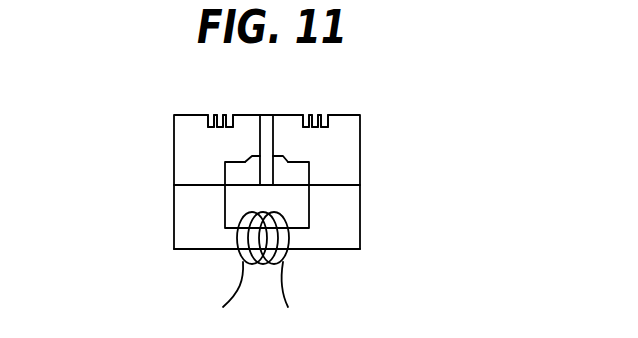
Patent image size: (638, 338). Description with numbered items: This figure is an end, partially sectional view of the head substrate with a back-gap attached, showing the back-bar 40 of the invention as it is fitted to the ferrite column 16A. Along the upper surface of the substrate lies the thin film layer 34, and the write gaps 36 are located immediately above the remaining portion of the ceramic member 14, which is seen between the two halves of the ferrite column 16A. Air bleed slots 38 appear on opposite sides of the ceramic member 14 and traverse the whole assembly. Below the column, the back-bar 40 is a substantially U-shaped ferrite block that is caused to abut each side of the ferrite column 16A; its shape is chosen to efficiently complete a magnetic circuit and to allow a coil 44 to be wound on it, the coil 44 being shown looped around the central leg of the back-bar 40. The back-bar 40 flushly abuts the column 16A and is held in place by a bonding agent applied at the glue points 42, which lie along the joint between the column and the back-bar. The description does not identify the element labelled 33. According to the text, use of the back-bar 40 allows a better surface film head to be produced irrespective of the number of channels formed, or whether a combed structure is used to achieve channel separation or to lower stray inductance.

The ferrite column 16A is at (198, 142).
The thin film layer 34 is at (250, 114).
The write gaps 36 is at (268, 114).
The air bleed slots 38 is at (315, 113).
The ceramic member 14 is at (271, 148).
The inner cavity 33 is at (247, 171).
The glue points 42 is at (174, 185).
The back-bar 40 is at (340, 236).
The coil 44 is at (282, 286).